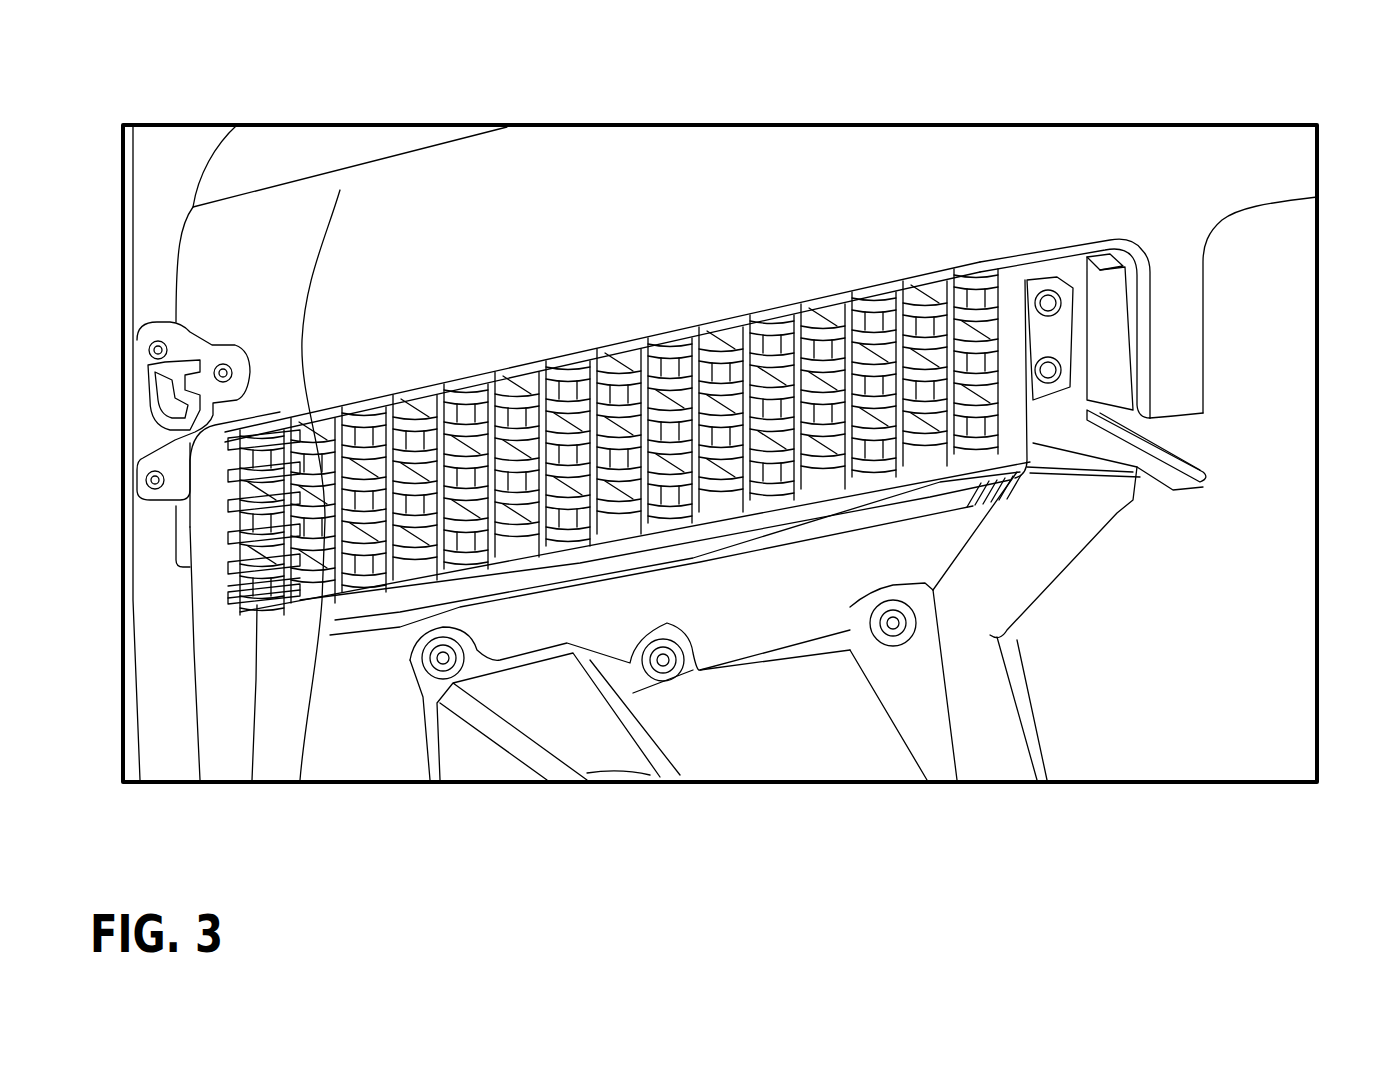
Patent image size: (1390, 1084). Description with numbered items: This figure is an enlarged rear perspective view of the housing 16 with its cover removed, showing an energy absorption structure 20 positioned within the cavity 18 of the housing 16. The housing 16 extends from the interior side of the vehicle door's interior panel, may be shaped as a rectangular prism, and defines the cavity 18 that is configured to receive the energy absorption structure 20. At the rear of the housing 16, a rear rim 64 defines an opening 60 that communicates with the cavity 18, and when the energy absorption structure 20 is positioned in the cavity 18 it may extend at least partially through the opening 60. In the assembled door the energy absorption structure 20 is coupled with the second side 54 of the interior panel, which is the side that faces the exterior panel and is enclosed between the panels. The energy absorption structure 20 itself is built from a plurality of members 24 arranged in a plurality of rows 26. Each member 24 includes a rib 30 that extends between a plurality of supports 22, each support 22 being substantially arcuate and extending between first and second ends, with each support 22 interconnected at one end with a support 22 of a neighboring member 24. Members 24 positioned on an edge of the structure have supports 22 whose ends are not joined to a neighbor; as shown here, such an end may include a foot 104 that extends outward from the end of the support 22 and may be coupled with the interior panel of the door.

The housing 16 is at (1117, 288).
The cavity 18 is at (1103, 333).
The energy absorption structure 20 is at (502, 365).
The support 22 is at (343, 448).
The member 24 is at (393, 438).
The row 26 is at (240, 525).
The rib 30 is at (357, 587).
The second side 54 is at (770, 215).
The opening 60 is at (1038, 270).
The rear rim 64 is at (1117, 242).
The foot 104 is at (250, 587).